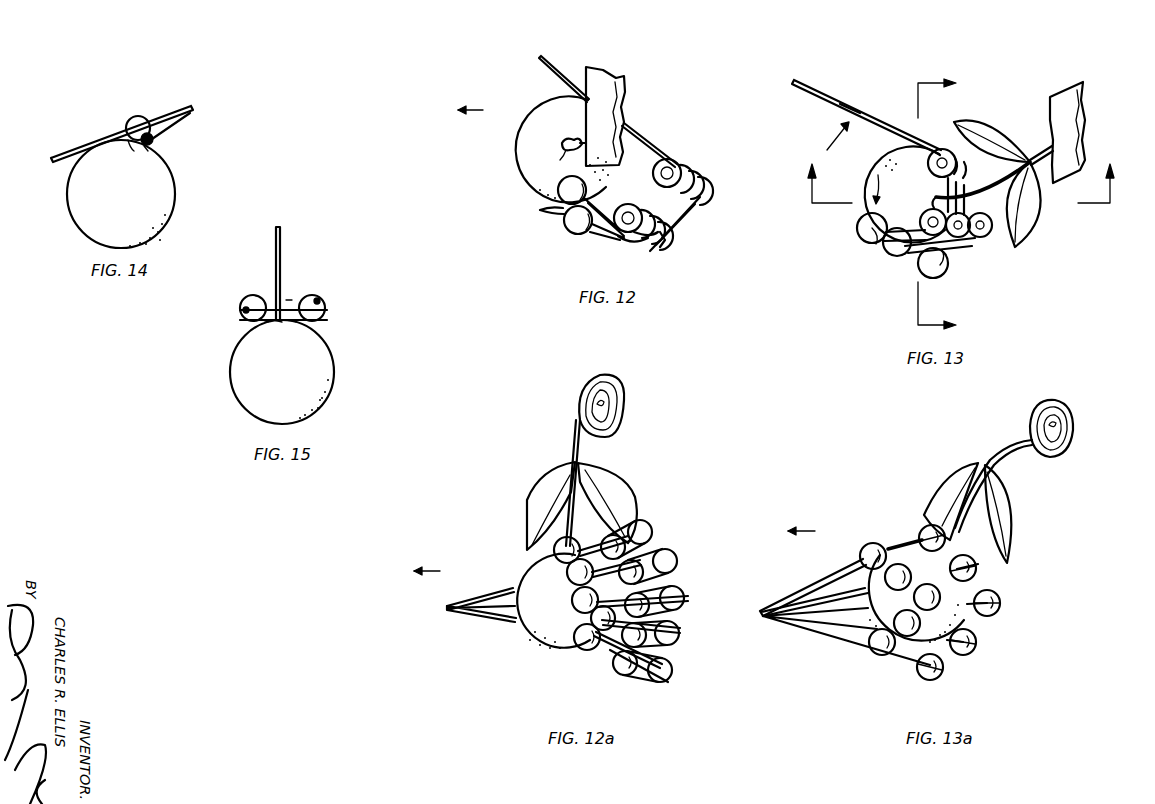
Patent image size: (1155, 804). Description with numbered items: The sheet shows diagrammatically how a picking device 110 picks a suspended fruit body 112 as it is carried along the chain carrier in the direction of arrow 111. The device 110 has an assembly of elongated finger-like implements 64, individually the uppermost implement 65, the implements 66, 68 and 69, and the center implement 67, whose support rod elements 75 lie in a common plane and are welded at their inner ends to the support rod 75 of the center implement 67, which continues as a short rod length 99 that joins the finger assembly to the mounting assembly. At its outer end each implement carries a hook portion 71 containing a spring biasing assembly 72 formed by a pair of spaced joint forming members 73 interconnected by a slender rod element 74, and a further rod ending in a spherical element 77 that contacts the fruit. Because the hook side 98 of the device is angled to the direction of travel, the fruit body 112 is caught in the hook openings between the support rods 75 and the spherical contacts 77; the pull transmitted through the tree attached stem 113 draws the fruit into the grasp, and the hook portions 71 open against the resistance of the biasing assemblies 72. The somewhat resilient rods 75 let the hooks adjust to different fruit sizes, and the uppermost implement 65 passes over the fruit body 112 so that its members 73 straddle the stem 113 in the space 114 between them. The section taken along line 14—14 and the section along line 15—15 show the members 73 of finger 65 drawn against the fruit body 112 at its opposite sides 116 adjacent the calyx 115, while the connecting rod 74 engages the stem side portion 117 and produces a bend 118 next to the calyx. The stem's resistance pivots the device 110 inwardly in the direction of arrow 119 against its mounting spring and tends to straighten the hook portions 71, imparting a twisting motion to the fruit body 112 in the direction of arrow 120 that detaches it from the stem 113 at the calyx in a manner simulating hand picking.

In FIG. 13, the section line 14- 14 is at (959, 179).
In FIG. 13, the section line 15- 15 is at (946, 204).
In FIG. 12, the finger-like implements 64 is at (676, 158).
In FIG. 12A, the finger-like implements 64 is at (686, 592).
In FIG. 14, the uppermost finger-like implement 65 is at (104, 124).
In FIG. 15, the uppermost finger-like implement 65 is at (240, 316).
In FIG. 12, the uppermost finger-like implement 65 is at (624, 238).
In FIG. 13, the uppermost finger-like implement 65 is at (948, 148).
In FIG. 12A, the uppermost finger-like implement 65 is at (652, 534).
In FIG. 13A, the uppermost finger-like implement 65 is at (950, 540).
In FIG. 12, the finger-like implement 66 is at (638, 244).
In FIG. 13, the finger-like implement 66 is at (956, 246).
In FIG. 12A, the finger-like implement 66 is at (678, 562).
In FIG. 13A, the finger-like implement 66 is at (978, 570).
In FIG. 12, the center finger-like implement 67 is at (656, 240).
In FIG. 13, the center finger-like implement 67 is at (988, 236).
In FIG. 12A, the center finger-like implement 67 is at (684, 598).
In FIG. 13A, the center finger-like implement 67 is at (1000, 606).
In FIG. 12A, the finger-like implement 68 is at (680, 638).
In FIG. 13A, the finger-like implement 68 is at (976, 648).
In FIG. 12A, the finger-like implement 69 is at (670, 676).
In FIG. 13A, the finger-like implement 69 is at (940, 676).
In FIG. 12, the hook portion 71 is at (676, 218).
In FIG. 12A, the hook portion 71 is at (612, 576).
In FIG. 15, the biasing assembly 72 is at (320, 302).
In FIG. 12, the biasing assembly 72 is at (676, 226).
In FIG. 13, the biasing assembly 72 is at (924, 210).
In FIG. 12A, the biasing assembly 72 is at (646, 682).
In FIG. 15, the joint forming members 73 is at (254, 296).
In FIG. 12, the joint forming members 73 is at (656, 180).
In FIG. 13, the joint forming members 73 is at (930, 162).
In FIG. 14, the rod element 74 is at (158, 140).
In FIG. 15, the rod element 74 is at (290, 300).
In FIG. 12, the support rod element 75 is at (646, 134).
In FIG. 13, the support rod element 75 is at (852, 104).
In FIG. 12A, the support rod element 75 is at (506, 588).
In FIG. 12, the spherical element 77 is at (560, 226).
In FIG. 12A, the spherical element 77 is at (578, 616).
In FIG. 13A, the spherical element 77 is at (900, 599).
In FIG. 12, the hook side 98 is at (560, 82).
In FIG. 13A, the short rod length 99 is at (776, 614).
In FIG. 12, the picking device 110 is at (682, 164).
In FIG. 13, the picking device 110 is at (830, 92).
In FIG. 12A, the picking device 110 is at (500, 618).
In FIG. 13A, the picking device 110 is at (830, 576).
In FIG. 12, the direction of movement arrow 111 is at (476, 112).
In FIG. 12A, the direction of movement arrow 111 is at (430, 567).
In FIG. 13A, the direction of movement arrow 111 is at (808, 527).
In FIG. 14, the fruit body 112 is at (68, 220).
In FIG. 15, the fruit body 112 is at (242, 404).
In FIG. 12, the fruit body 112 is at (518, 174).
In FIG. 13, the fruit body 112 is at (880, 160).
In FIG. 12A, the fruit body 112 is at (528, 640).
In FIG. 13A, the fruit body 112 is at (852, 624).
In FIG. 14, the tree attached stem 113 is at (184, 122).
In FIG. 15, the tree attached stem 113 is at (284, 270).
In FIG. 12, the tree attached stem 113 is at (576, 136).
In FIG. 13, the tree attached stem 113 is at (1034, 200).
In FIG. 12A, the tree attached stem 113 is at (556, 516).
In FIG. 13A, the tree attached stem 113 is at (966, 510).
In FIG. 13, the space 114 is at (936, 188).
In FIG. 14, the calyx 115 is at (130, 152).
In FIG. 15, the calyx 115 is at (280, 324).
In FIG. 12, the calyx 115 is at (566, 158).
In FIG. 15, the opposite sides 116 is at (266, 324).
In FIG. 14, the stem side portion 117 is at (146, 152).
In FIG. 14, the bend 118 is at (140, 116).
In FIG. 13, the pivot direction arrow 119 is at (826, 141).
In FIG. 13, the rotation direction arrow 120 is at (876, 180).